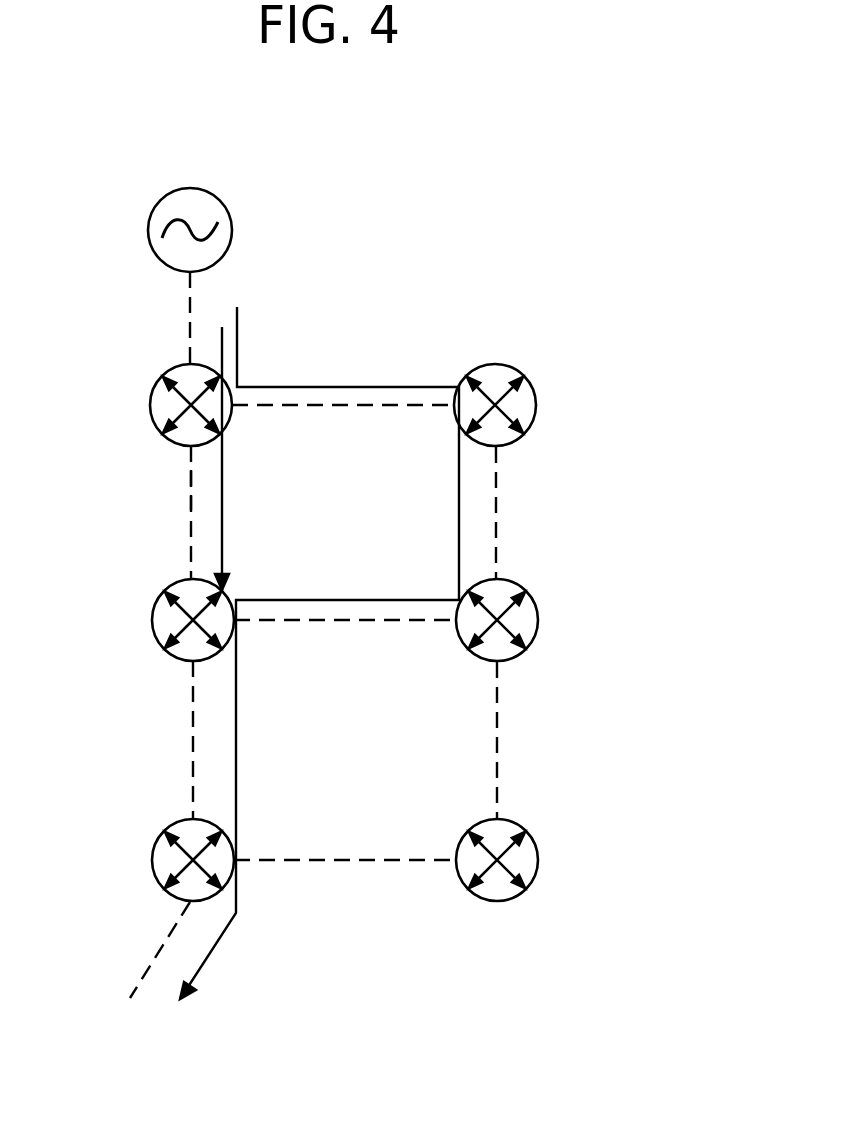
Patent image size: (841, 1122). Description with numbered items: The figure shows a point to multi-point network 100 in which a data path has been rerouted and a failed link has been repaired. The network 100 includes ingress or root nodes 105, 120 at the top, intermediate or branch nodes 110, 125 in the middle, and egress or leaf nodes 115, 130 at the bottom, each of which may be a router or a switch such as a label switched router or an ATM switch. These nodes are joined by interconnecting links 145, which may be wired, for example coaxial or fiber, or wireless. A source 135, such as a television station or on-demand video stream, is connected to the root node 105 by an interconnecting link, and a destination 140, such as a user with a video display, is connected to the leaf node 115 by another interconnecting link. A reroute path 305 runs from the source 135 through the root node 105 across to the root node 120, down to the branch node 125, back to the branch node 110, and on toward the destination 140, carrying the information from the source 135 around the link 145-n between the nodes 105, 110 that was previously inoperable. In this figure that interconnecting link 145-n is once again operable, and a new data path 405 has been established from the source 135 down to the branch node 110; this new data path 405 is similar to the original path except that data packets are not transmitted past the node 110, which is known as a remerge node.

The point to multi-point network 100 is at (630, 164).
The ingress or root node 105 is at (150, 394).
The intermediate or branch node 110 is at (152, 615).
The egress or leaf node 115 is at (153, 858).
The ingress or root node 120 is at (538, 387).
The intermediate or branch node 125 is at (538, 620).
The egress or leaf node 130 is at (538, 860).
The source 135 is at (233, 225).
The destination 140 is at (132, 1041).
The interconnecting link 145 is at (192, 285).
The interconnecting link 145-n is at (191, 490).
The reroute path 305 is at (420, 387).
The new data path 405 is at (196, 351).